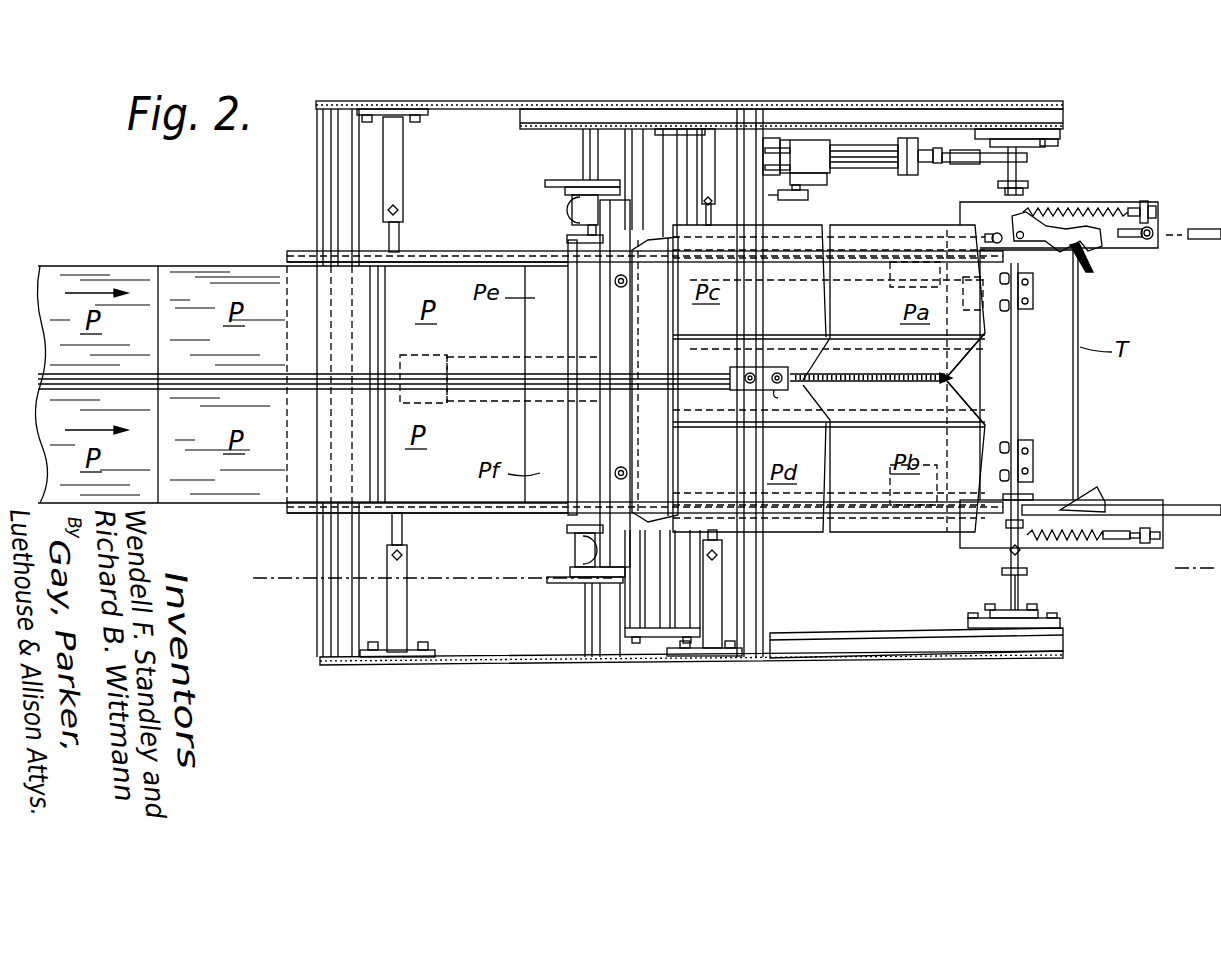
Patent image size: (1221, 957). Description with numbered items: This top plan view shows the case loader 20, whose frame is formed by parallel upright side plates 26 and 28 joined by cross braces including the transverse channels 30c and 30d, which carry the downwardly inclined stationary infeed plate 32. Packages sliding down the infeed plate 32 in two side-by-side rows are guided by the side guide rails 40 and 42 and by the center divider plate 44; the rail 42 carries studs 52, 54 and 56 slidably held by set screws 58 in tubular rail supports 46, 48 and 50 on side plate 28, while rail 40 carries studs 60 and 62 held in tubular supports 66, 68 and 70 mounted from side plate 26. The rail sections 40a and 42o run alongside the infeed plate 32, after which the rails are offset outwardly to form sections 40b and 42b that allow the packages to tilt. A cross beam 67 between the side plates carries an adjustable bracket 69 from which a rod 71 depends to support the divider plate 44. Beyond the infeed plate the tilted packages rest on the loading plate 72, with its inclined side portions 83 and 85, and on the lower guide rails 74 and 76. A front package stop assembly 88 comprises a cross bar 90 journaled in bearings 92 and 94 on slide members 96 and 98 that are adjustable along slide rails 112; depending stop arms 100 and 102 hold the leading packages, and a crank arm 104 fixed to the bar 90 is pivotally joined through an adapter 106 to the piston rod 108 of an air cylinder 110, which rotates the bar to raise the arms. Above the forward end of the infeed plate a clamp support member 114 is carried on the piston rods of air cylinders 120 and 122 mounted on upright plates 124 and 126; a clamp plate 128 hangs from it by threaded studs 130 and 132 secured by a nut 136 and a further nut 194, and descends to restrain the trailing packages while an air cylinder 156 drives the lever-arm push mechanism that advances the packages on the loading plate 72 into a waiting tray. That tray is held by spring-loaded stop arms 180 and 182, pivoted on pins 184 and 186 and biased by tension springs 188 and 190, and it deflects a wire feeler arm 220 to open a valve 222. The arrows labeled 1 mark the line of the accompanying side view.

The case loader 20 is at (459, 44).
The side plate frame member 26 is at (583, 101).
The side plate frame member 28 is at (548, 664).
The transverse channel 30c is at (317, 183).
The transverse channel 30d is at (598, 633).
The stationary infeed plate 32 is at (286, 468).
The side guide rail 40 is at (458, 245).
The guide rail section 40a is at (490, 250).
The guide rail section 40b is at (865, 226).
The side guide rail 42 is at (496, 520).
The guide rail section 42o is at (486, 514).
The guide rail section 42b is at (884, 533).
The center divider plate 44 is at (712, 365).
The tubular rail support 46 is at (408, 591).
The tubular rail support 48 is at (722, 612).
The tubular rail support 50 is at (1020, 591).
The stud 52 is at (397, 521).
The stud 54 is at (720, 534).
The stud 56 is at (1012, 530).
The set screw 58 is at (403, 556).
The stud 60 is at (398, 238).
The stud 62 is at (713, 223).
The tubular rail support 66 is at (404, 161).
The cross beam 67 is at (764, 309).
The tubular rail support 68 is at (707, 130).
The bracket 69 is at (775, 367).
The tubular rail support 70 is at (1020, 177).
The rod 71 is at (778, 393).
The loading plate 72 is at (955, 379).
The lower guide rail 74 is at (850, 488).
The lower guide rail 76 is at (888, 276).
The inclined side portion 83 is at (940, 300).
The inclined side portion 85 is at (978, 431).
The front package stop assembly 88 is at (1068, 313).
The cross bar 90 is at (1019, 402).
The bearing 92 is at (1000, 614).
The bearing 94 is at (1050, 142).
The slide member 96 is at (1048, 622).
The slide member 98 is at (985, 129).
The stop arm 100 is at (1007, 445).
The stop arm 102 is at (992, 308).
The crank arm 104 is at (998, 162).
The adapter 106 is at (948, 164).
The piston rod 108 is at (928, 149).
The air cylinder 110 is at (848, 145).
The slide rail member 112 is at (624, 112).
The clamp support member 114 is at (600, 423).
The air cylinder 120 is at (576, 209).
The air cylinder 122 is at (575, 552).
The upright support plate 124 is at (553, 180).
The upright support plate 126 is at (556, 584).
The clamp plate 128 is at (568, 325).
The threaded stud 130 is at (627, 284).
The threaded stud 132 is at (629, 470).
The nut 136 is at (660, 313).
The air cylinder 156 is at (497, 403).
The stop arm 180 is at (1098, 494).
The stop arm 182 is at (1112, 246).
The pin 184 is at (1030, 510).
The pin 186 is at (1023, 230).
The tension spring 188 is at (1092, 543).
The tension spring 190 is at (1092, 212).
The nut 194 is at (660, 462).
The wire feeler arm 220 is at (1090, 258).
The valve 222 is at (1080, 202).
The section line 1- 1 is at (280, 588).